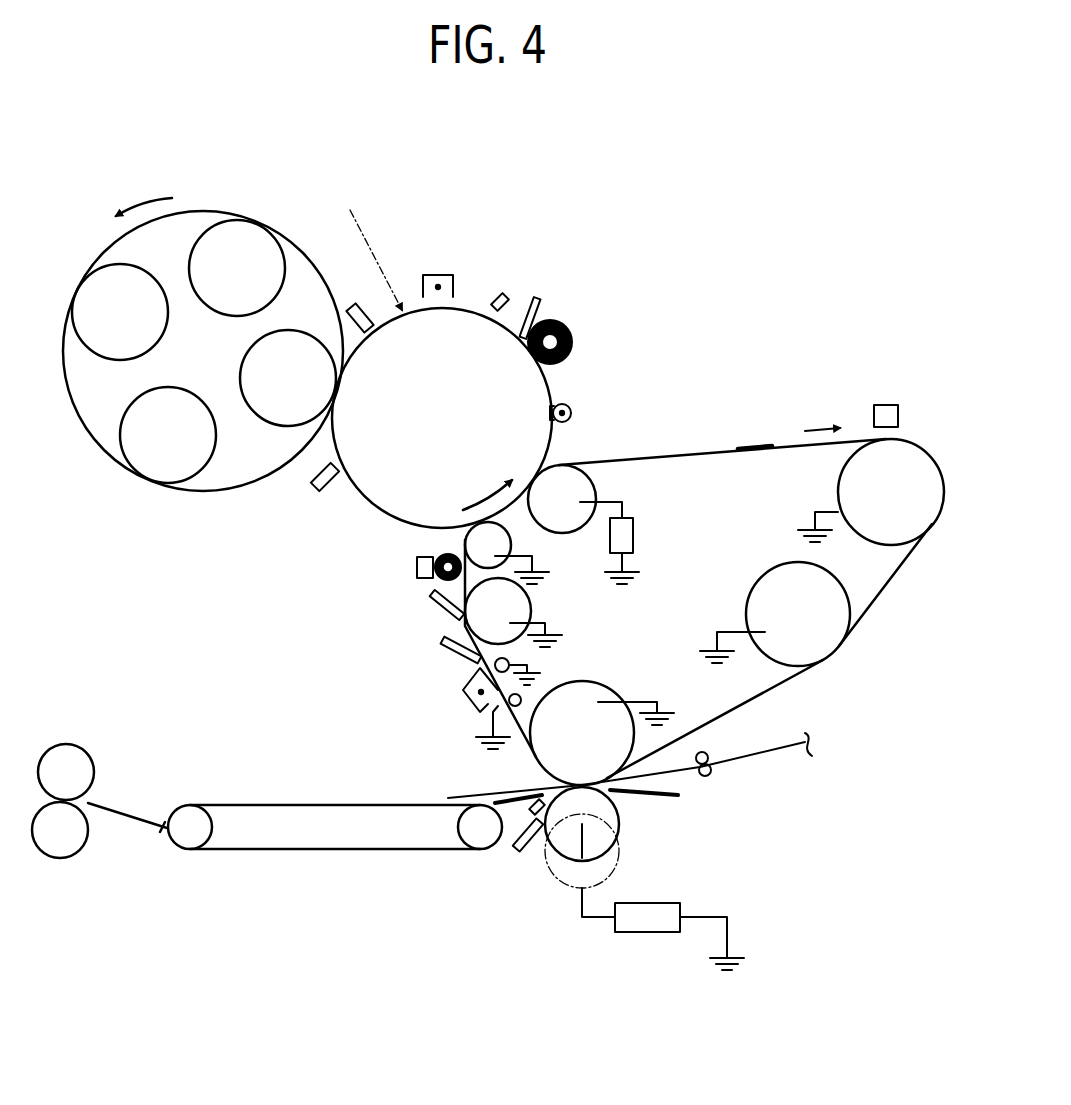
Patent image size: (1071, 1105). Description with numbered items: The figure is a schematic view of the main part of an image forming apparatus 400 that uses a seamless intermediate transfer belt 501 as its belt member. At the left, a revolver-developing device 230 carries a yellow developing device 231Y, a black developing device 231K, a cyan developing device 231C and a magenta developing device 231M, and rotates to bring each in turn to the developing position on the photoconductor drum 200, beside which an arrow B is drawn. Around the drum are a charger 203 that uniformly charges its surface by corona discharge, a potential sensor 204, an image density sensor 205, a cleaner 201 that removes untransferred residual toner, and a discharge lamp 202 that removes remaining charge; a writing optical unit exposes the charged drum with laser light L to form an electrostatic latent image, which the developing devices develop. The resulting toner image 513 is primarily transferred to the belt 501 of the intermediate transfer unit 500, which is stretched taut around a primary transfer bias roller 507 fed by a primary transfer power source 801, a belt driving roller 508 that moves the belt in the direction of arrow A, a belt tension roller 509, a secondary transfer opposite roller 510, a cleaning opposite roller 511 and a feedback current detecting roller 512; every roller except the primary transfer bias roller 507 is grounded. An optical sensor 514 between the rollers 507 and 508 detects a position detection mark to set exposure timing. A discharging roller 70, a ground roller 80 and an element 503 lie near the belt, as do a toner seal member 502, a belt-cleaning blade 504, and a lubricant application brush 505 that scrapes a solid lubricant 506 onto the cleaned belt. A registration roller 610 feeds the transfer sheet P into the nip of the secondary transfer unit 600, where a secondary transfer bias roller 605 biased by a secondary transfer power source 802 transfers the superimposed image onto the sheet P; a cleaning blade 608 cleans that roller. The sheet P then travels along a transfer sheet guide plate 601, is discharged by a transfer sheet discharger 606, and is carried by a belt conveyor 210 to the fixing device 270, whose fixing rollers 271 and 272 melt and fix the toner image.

The image forming apparatus 400 is at (192, 170).
The revolver-developing device 230 is at (157, 508).
The yellow developing device 231Y is at (146, 326).
The black developing device 231K is at (263, 282).
The cyan developing device 231C is at (314, 392).
The magenta developing device 231M is at (195, 449).
The photoconductor drum 200 is at (460, 434).
The cleaner 201 is at (535, 282).
The discharge lamp 202 is at (502, 290).
The charger 203 is at (460, 248).
The potential sensor 204 is at (358, 304).
The image density sensor 205 is at (316, 490).
The laser light L is at (376, 223).
The drum rotation direction B is at (487, 491).
The intermediate transfer unit 500 is at (778, 421).
The intermediate transfer belt 501 is at (648, 458).
The toner image 513 is at (745, 443).
The optical sensor 514 is at (888, 402).
The direction of arrow A is at (822, 415).
The primary transfer bias roller 507 is at (600, 485).
The belt driving roller 508 is at (840, 484).
The belt tension roller 509 is at (747, 603).
The secondary transfer opposite roller 510 is at (600, 681).
The cleaning opposite roller 511 is at (532, 612).
The feedback current detecting roller 512 is at (515, 540).
The primary transfer power source 801 is at (636, 538).
The secondary transfer power source 802 is at (650, 902).
The lubricant application brush 505 is at (445, 555).
The lubricant 506 is at (415, 568).
The belt-cleaning blade 504 is at (440, 608).
The toner seal member 502 is at (445, 648).
The sensor 503 is at (467, 705).
The ground roller 80 is at (490, 667).
The discharging roller 70 is at (522, 698).
The secondary transfer unit 600 is at (560, 903).
The secondary transfer bias roller 605 is at (622, 820).
The transfer sheet discharger 606 is at (532, 800).
The cleaning blade 608 is at (516, 847).
The transfer sheet guide plate 601 is at (680, 795).
The registration roller 610 is at (717, 749).
The transfer sheet P is at (766, 760).
The belt conveyor 210 is at (325, 804).
The fixing device 270 is at (99, 838).
The fixing roller 271 is at (66, 746).
The fixing roller 272 is at (58, 850).